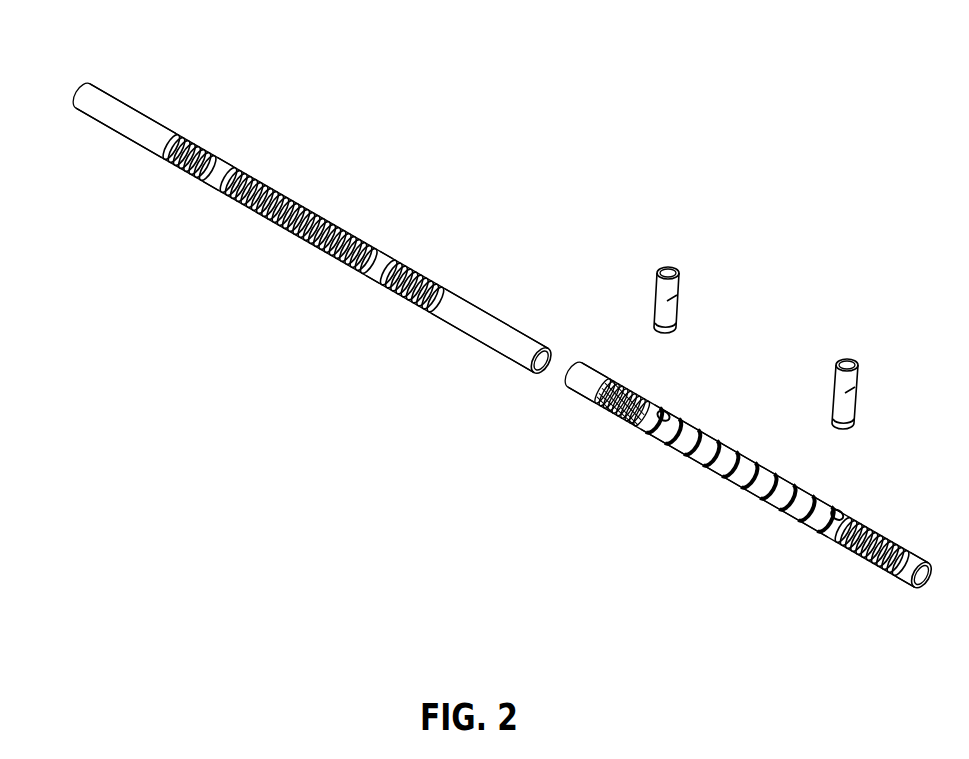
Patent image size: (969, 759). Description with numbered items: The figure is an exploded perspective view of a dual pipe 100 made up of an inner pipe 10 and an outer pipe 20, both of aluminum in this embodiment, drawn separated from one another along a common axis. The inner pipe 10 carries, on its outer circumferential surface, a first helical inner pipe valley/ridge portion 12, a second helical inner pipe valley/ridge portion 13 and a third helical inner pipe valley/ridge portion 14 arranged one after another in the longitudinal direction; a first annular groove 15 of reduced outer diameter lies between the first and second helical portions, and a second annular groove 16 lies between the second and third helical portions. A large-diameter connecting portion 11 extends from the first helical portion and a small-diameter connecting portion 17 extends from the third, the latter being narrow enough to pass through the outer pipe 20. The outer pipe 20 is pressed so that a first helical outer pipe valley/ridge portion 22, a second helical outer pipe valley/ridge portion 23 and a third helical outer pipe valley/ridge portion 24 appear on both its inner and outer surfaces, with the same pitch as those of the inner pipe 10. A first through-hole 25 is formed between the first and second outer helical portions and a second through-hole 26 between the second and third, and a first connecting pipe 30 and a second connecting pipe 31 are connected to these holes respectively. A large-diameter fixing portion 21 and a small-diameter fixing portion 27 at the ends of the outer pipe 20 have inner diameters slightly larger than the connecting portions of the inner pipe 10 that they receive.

The dual pipe 100 is at (418, 64).
The inner pipe 10 is at (180, 102).
The large-diameter connecting portion 11 is at (98, 108).
The first helical inner pipe valley/ridge portion 12 is at (173, 163).
The second helical inner pipe valley/ridge portion 13 is at (273, 228).
The third helical inner pipe valley/ridge portion 14 is at (400, 296).
The first annular groove 15 is at (230, 167).
The second annular groove 16 is at (380, 262).
The small-diameter connecting portion 17 is at (492, 328).
The outer pipe 20 is at (739, 405).
The large-diameter fixing portion 21 is at (590, 392).
The first helical outer pipe valley/ridge portion 22 is at (613, 425).
The second helical outer pipe valley/ridge portion 23 is at (720, 473).
The third helical outer pipe valley/ridge portion 24 is at (842, 550).
The first through-hole 25 is at (680, 411).
The second through-hole 26 is at (847, 512).
The small-diameter fixing portion 27 is at (906, 582).
The first connecting pipe 30 is at (682, 298).
The second connecting pipe 31 is at (862, 385).